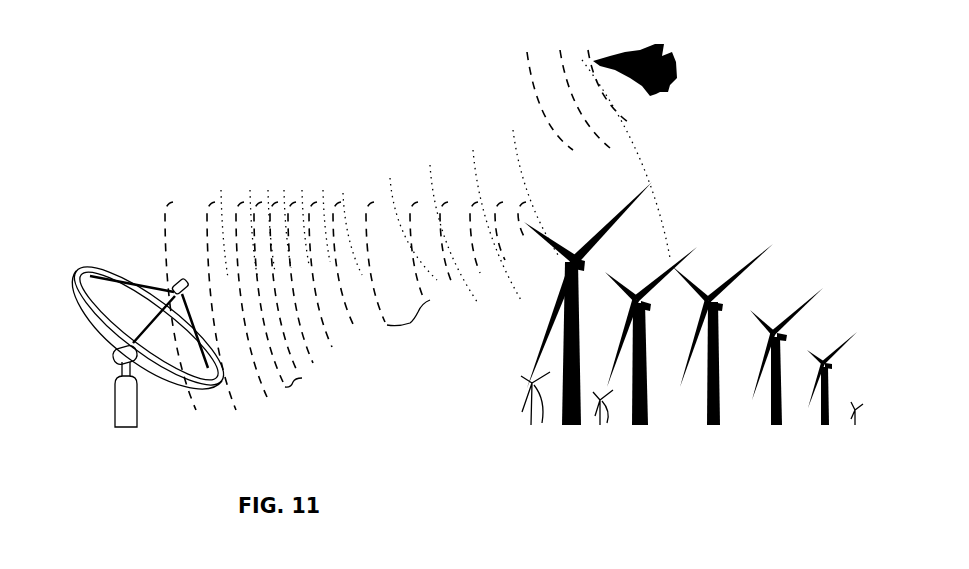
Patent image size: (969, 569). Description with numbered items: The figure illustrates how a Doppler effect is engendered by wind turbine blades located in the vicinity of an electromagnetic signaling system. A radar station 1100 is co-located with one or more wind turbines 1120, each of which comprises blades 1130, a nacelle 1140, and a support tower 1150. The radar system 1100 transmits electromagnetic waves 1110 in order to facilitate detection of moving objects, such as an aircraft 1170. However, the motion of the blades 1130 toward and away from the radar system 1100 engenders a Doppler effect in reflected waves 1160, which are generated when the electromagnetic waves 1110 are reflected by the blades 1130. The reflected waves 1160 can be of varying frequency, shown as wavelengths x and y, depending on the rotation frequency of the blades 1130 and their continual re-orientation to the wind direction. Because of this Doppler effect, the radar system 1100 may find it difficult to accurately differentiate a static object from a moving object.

The radar station 1100 is at (123, 428).
The electromagnetic waves 1110 is at (644, 160).
The wind turbine 1120 is at (720, 465).
The blade 1130 is at (553, 244).
The nacelle 1140 is at (585, 263).
The support tower 1150 is at (572, 427).
The reflected waves 1160 is at (336, 203).
The aircraft 1170 is at (664, 60).